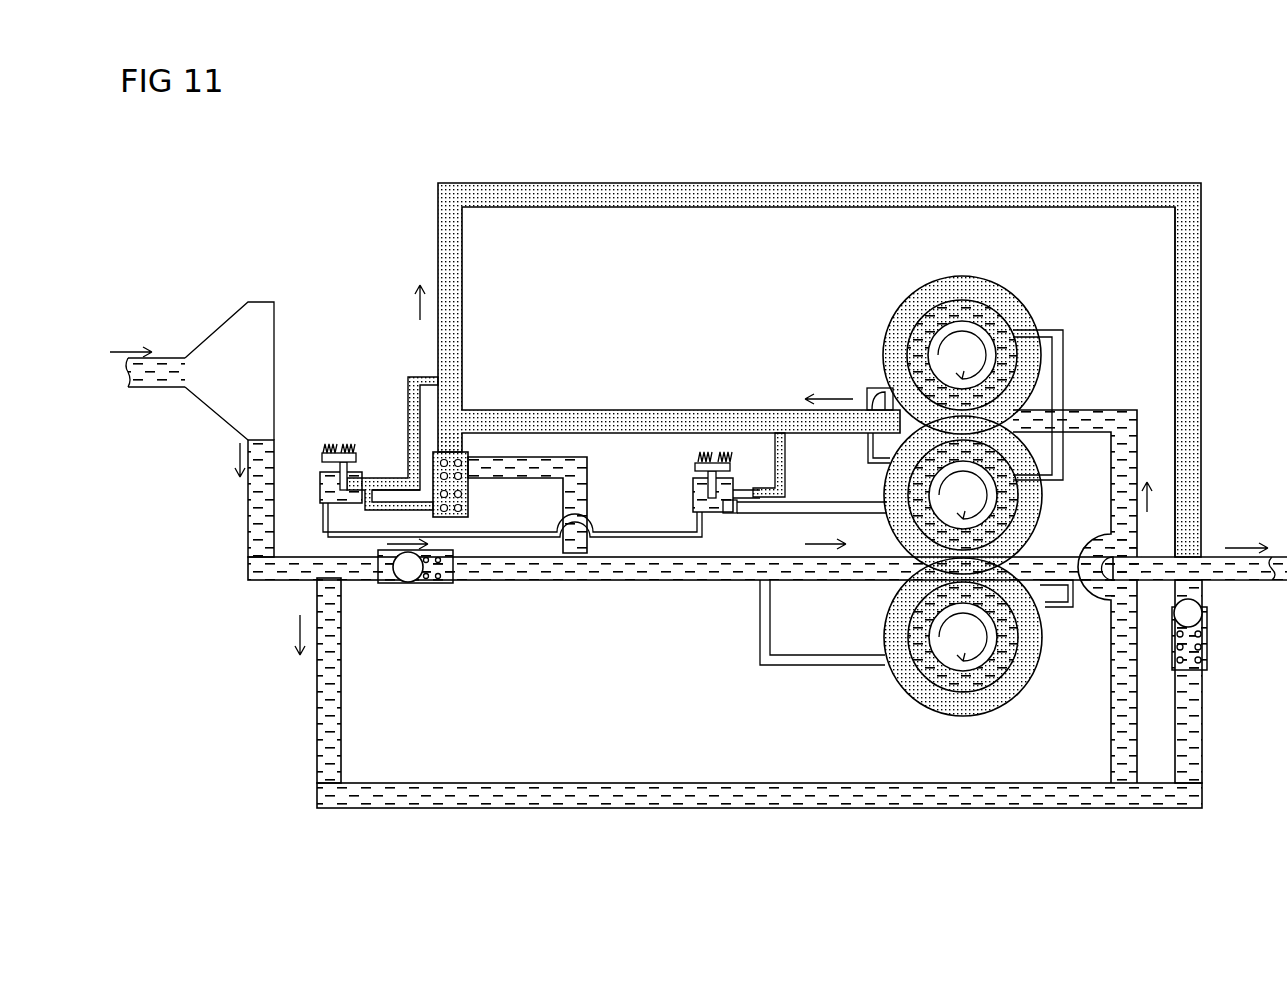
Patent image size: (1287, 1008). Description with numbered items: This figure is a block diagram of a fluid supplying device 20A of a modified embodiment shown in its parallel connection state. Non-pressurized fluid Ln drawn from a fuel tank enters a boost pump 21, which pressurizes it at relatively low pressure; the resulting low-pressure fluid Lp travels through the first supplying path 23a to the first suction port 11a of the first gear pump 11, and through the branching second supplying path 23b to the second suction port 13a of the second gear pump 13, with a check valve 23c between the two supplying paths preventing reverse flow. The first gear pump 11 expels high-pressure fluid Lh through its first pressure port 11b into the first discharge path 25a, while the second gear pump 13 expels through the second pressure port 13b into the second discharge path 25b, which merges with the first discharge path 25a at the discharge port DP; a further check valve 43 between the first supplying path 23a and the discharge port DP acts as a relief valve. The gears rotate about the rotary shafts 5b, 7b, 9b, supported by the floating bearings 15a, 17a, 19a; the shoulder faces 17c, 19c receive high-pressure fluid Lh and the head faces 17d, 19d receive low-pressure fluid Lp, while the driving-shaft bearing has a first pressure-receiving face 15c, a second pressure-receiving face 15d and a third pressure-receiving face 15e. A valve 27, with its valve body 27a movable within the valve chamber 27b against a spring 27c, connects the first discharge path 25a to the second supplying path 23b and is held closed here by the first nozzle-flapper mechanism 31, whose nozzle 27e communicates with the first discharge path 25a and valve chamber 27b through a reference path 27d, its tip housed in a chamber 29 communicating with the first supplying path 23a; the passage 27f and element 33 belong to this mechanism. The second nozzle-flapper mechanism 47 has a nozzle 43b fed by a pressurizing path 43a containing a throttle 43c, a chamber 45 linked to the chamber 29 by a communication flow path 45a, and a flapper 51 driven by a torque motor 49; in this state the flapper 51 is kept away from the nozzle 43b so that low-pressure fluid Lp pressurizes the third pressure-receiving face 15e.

The fluid supplying device 20A is at (558, 148).
The first discharge path 25a is at (661, 184).
The second discharge path 25b is at (1190, 516).
The boost pump 21 is at (266, 302).
The first supplying path 23a is at (1134, 422).
The second supplying path 23b is at (495, 581).
The check valve 23c is at (408, 584).
The valve 27 is at (451, 523).
The valve body 27a is at (456, 450).
The valve chamber 27b is at (469, 510).
The spring 27c is at (470, 490).
The reference path 27d is at (408, 400).
The nozzle 27e is at (329, 503).
The passage 27f is at (387, 486).
The chamber 29 is at (322, 477).
The nozzle-flapper mechanism 31 is at (331, 432).
The spring 33 is at (321, 448).
The check valve 43 is at (1207, 655).
The pressurizing path 43a is at (778, 436).
The nozzle 43b is at (728, 514).
The throttle 43c is at (778, 452).
The chamber 45 is at (687, 506).
The communication flow path 45a is at (650, 540).
The second nozzle-flapper mechanism 47 is at (680, 477).
The torque motor 49 is at (694, 462).
The flapper 51 is at (690, 488).
The first gear pump 11 is at (1070, 368).
The first suction port 11a is at (1064, 404).
The first pressure port 11b is at (876, 390).
The second gear pump 13 is at (878, 574).
The second suction port 13a is at (904, 584).
The second pressure port 13b is at (1070, 598).
The floating bearing 17a is at (1006, 294).
The face of shoulder 17c is at (916, 300).
The face of head 17d is at (906, 343).
The rotary shaft 7b is at (961, 322).
The floating bearing 15a is at (1054, 490).
The first pressure-receiving face 15c is at (890, 488).
The second pressure-receiving face 15d is at (1046, 500).
The third pressure-receiving face 15e is at (884, 496).
The rotary shaft 5b is at (1020, 516).
The floating bearing 19a is at (1008, 698).
The face of shoulder 19c is at (902, 680).
The face of head 19d is at (938, 674).
The rotary shaft 9b is at (985, 688).
The high-pressure fluid Lh is at (926, 196).
The non-pressurized fluid Ln is at (158, 395).
The low-pressure fluid Lp is at (614, 796).
The discharge port DP is at (1195, 548).